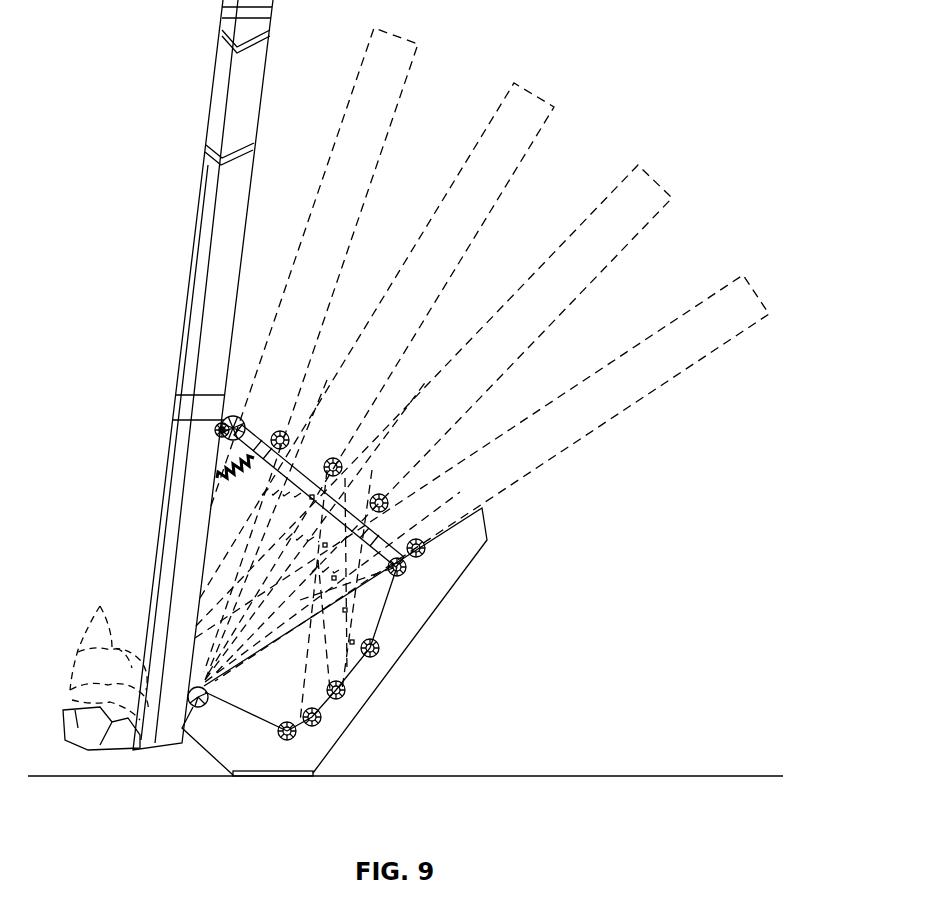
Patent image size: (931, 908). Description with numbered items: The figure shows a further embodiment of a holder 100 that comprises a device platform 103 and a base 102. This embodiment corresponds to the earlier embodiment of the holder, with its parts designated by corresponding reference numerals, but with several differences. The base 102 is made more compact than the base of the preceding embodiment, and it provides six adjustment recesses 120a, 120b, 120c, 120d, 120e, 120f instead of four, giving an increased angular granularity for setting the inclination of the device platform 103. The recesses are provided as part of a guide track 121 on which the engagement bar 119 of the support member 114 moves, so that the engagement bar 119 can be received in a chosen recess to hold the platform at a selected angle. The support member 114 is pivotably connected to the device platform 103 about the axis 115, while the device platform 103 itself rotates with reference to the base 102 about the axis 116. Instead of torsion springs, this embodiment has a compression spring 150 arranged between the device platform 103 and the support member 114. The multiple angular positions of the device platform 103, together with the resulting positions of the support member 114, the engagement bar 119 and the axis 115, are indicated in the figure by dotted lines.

The holder 100 is at (676, 258).
The base 102 is at (468, 548).
The device platform 103 is at (255, 118).
The support member 114 is at (300, 472).
The axis 115 is at (240, 418).
The axis of rotation of the device platform 116 is at (190, 712).
The engagement bar 119 is at (402, 552).
The adjustment recess 120a is at (295, 735).
The adjustment recess 120b is at (320, 720).
The adjustment recess 120c is at (345, 692).
The adjustment recess 120d is at (378, 652).
The adjustment recess 120e is at (418, 540).
The adjustment recess 120f is at (432, 552).
The guide track 121 is at (258, 712).
The compression spring 150 is at (217, 474).